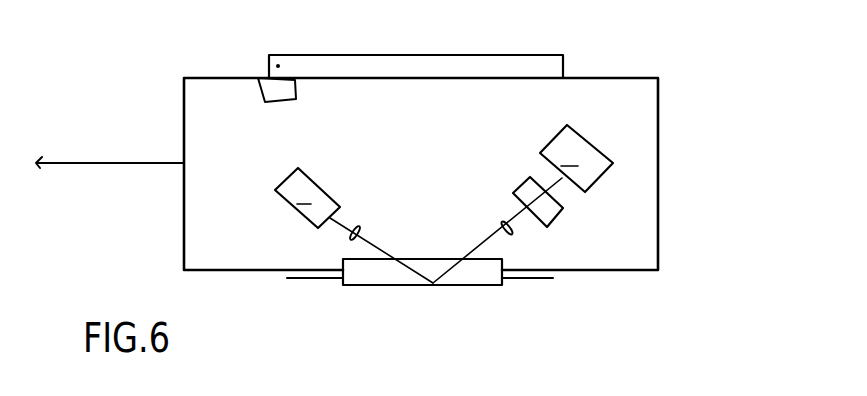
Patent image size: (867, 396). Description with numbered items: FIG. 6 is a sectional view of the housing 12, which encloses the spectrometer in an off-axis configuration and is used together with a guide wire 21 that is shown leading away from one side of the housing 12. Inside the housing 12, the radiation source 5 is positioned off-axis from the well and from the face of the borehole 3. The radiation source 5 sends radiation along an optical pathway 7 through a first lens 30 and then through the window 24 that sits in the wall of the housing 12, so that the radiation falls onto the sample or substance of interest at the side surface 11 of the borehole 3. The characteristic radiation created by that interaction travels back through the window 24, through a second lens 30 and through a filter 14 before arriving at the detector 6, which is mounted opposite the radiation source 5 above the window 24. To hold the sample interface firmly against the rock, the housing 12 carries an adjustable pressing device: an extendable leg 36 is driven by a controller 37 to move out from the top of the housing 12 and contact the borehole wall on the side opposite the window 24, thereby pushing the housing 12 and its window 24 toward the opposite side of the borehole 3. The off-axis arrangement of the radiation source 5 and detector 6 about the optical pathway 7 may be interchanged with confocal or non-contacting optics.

The borehole 3 is at (548, 281).
The radiation source 5 is at (354, 225).
The detector 6 is at (576, 158).
The optical pathway 7 is at (478, 254).
The side surface 11 is at (305, 279).
The housing 12 is at (659, 145).
The filter 14 is at (560, 222).
The guide wire 21 is at (94, 161).
The window 24 is at (375, 285).
The lens 30 is at (361, 227).
The extendable leg 36 is at (513, 55).
The controller 37 is at (297, 92).